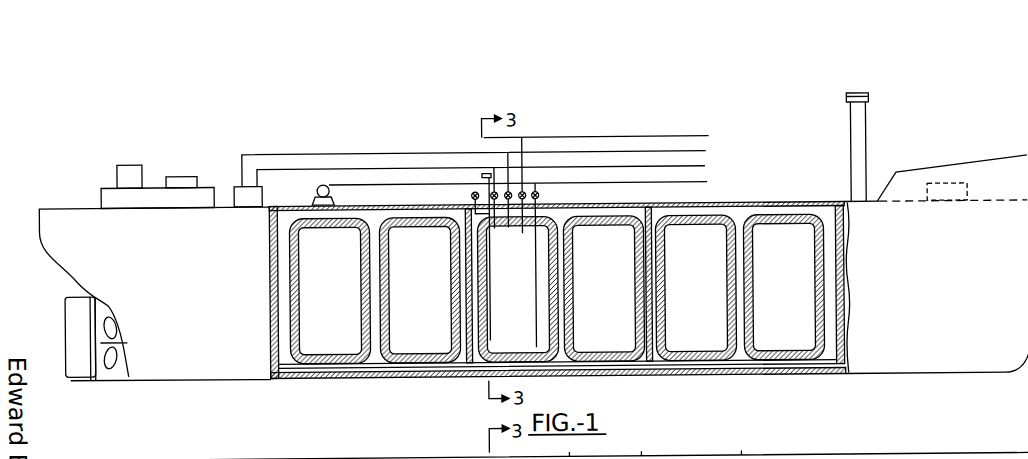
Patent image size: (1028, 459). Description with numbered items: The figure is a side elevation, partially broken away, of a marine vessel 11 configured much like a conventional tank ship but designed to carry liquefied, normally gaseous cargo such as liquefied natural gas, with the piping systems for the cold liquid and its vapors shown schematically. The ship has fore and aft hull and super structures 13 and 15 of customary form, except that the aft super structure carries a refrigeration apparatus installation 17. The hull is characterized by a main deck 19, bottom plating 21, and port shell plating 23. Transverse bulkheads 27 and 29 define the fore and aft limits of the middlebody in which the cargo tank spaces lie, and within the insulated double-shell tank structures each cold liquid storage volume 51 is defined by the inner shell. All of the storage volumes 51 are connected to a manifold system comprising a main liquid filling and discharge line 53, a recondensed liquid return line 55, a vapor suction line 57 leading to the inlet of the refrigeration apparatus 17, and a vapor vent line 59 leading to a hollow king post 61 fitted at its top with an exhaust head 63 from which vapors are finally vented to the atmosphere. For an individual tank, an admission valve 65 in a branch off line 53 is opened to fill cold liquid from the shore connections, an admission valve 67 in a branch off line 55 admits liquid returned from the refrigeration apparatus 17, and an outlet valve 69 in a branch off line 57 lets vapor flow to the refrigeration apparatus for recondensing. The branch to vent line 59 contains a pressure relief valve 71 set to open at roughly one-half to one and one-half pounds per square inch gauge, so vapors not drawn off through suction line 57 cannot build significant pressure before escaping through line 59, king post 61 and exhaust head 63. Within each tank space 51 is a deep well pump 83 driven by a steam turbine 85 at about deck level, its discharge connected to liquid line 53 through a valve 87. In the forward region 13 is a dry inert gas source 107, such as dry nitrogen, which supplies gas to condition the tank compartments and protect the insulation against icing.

The marine vessel 11 is at (633, 125).
The fore hull and super structure 13 is at (1027, 58).
The aft hull and super structure 15 is at (40, 103).
The refrigeration apparatus installation 17 is at (248, 197).
The main deck 19 is at (778, 205).
The bottom plating 21 is at (699, 377).
The port shell plating 23 is at (713, 451).
The transverse bulkhead 27 is at (845, 297).
The transverse bulkhead 29 is at (272, 299).
The cold liquid storage volume 51 is at (702, 295).
The main liquid filling and discharge line 53 is at (705, 183).
The recondensed liquid return line 55 is at (703, 167).
The vapor suction line 57 is at (704, 152).
The vapor vent line 59 is at (610, 138).
The king post 61 is at (867, 152).
The exhaust head 63 is at (870, 99).
The admission valve 65 is at (540, 196).
The admission valve 67 is at (503, 226).
The outlet valve 69 is at (523, 273).
The pressure relief valve 71 is at (550, 195).
The deep well pump 83 is at (491, 341).
The steam turbine 85 is at (485, 174).
The valve 87 is at (468, 195).
The dry inert gas source 107 is at (966, 192).